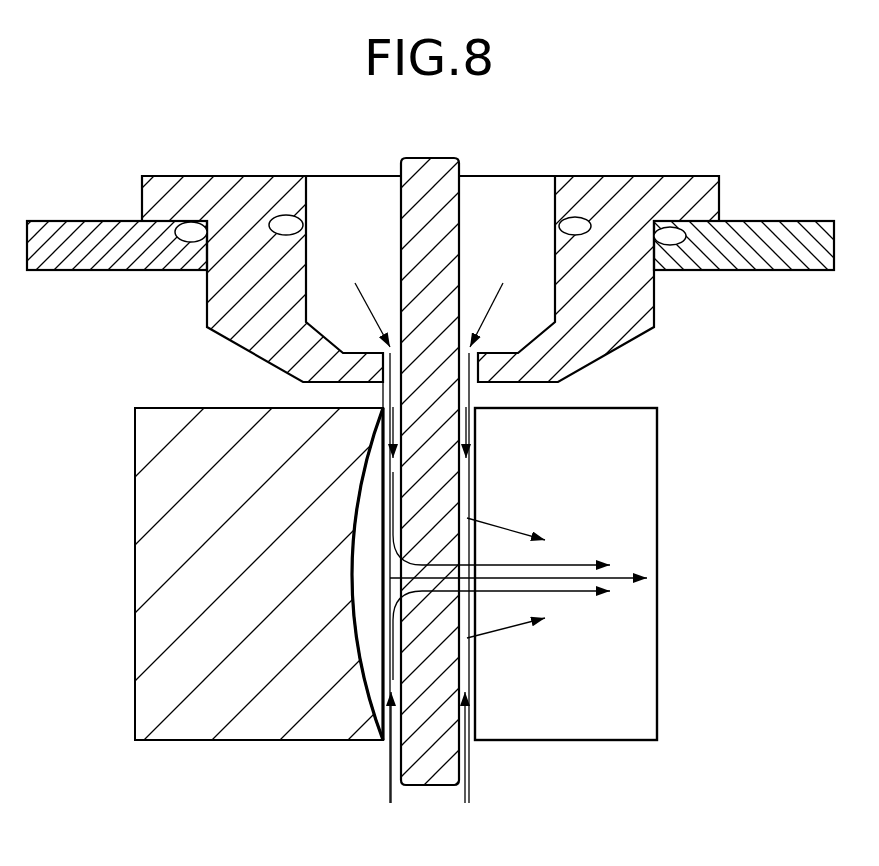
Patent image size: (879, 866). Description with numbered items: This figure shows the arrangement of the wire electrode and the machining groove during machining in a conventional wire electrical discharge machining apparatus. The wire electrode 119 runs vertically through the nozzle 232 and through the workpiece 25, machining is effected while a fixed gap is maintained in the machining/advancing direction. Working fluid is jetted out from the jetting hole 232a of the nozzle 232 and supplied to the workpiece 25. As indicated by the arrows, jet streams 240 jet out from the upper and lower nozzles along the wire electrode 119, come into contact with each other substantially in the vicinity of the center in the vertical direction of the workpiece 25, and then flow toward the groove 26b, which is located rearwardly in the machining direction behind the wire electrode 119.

The nozzle 232 is at (708, 195).
The jetting hole 232a is at (382, 393).
The jet streams 240 is at (468, 428).
The workpiece 25 is at (160, 688).
The groove 26b is at (635, 688).
The wire electrode 119 is at (423, 767).